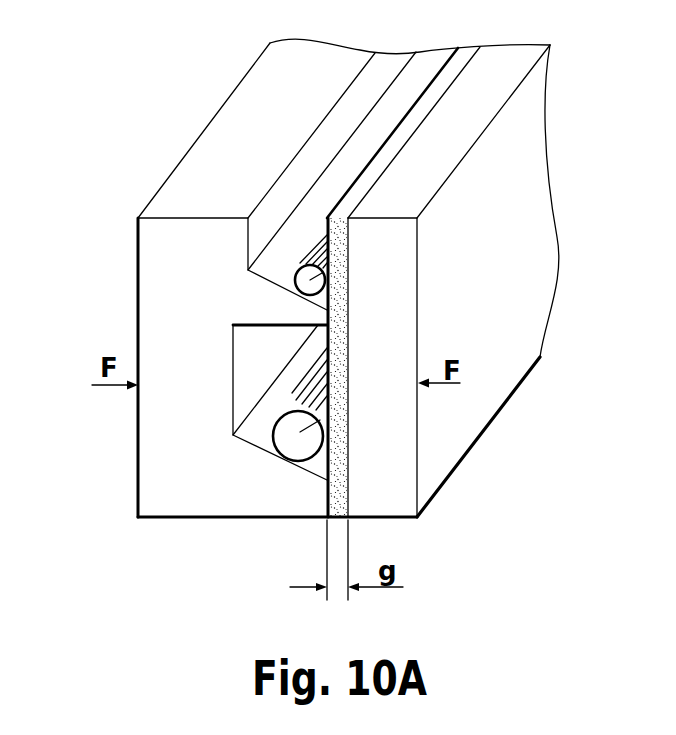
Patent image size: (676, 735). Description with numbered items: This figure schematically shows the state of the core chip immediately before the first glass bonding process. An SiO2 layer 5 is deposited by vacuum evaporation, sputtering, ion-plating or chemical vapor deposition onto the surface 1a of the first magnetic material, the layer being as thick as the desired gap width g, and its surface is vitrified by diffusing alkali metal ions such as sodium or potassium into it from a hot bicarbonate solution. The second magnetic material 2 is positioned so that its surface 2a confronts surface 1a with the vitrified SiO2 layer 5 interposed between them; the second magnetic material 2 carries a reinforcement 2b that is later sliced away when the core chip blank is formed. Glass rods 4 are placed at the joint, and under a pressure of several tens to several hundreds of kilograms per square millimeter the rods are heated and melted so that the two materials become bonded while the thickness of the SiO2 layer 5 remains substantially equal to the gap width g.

The second magnetic material 2 is at (232, 490).
The surface of the second magnetic material 2a is at (346, 305).
The reinforcement of the second magnetic material 2b is at (243, 285).
The surface of the first magnetic material 1a is at (346, 338).
The glass rod 4 is at (346, 263).
The SiO2 layer 5 is at (337, 233).